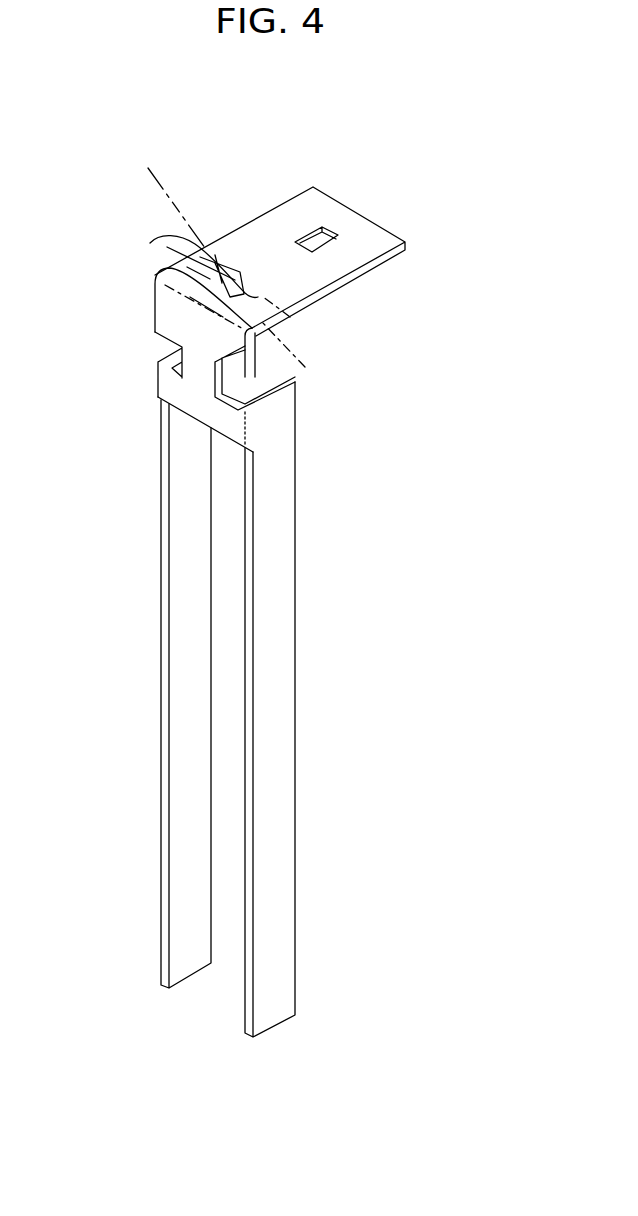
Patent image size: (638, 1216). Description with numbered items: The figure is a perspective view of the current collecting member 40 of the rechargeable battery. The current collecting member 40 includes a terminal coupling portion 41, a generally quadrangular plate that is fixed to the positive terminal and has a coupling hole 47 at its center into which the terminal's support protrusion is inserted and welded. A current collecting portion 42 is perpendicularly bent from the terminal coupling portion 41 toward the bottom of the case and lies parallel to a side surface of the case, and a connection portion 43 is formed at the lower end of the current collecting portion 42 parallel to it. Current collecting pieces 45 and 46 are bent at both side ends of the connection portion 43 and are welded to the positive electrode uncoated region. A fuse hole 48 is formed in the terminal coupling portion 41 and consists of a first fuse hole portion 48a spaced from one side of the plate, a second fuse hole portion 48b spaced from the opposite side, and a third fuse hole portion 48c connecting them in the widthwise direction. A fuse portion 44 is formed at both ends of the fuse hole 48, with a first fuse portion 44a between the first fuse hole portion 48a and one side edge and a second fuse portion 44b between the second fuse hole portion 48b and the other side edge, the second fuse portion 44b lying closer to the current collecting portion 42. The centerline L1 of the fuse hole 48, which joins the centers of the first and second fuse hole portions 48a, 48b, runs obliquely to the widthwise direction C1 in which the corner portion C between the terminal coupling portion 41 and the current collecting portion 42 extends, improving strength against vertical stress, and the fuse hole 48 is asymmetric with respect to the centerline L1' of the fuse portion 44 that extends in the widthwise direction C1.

The current collecting member 40 is at (292, 188).
The terminal coupling portion 41 is at (327, 208).
The current collecting portion 42 is at (152, 303).
The connection portion 43 is at (200, 405).
The fuse portion 44 is at (86, 214).
The first fuse portion 44a is at (162, 238).
The second fuse portion 44b is at (162, 266).
The current collecting piece 45 is at (277, 623).
The current collecting piece 46 is at (165, 628).
The coupling hole 47 is at (331, 232).
The fuse hole 48 is at (266, 289).
The first fuse hole portion 48a is at (212, 258).
The second fuse hole portion 48b is at (270, 311).
The third fuse hole portion 48c is at (258, 283).
The corner portion C is at (187, 315).
The widthwise direction C1 is at (305, 367).
The centerline of the fuse hole L1 is at (150, 203).
The centerline of the fuse portion L1' is at (311, 327).